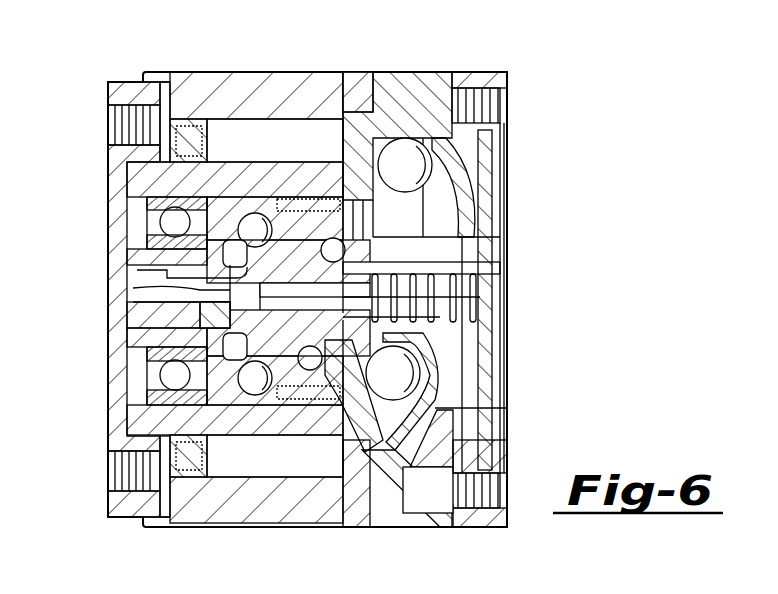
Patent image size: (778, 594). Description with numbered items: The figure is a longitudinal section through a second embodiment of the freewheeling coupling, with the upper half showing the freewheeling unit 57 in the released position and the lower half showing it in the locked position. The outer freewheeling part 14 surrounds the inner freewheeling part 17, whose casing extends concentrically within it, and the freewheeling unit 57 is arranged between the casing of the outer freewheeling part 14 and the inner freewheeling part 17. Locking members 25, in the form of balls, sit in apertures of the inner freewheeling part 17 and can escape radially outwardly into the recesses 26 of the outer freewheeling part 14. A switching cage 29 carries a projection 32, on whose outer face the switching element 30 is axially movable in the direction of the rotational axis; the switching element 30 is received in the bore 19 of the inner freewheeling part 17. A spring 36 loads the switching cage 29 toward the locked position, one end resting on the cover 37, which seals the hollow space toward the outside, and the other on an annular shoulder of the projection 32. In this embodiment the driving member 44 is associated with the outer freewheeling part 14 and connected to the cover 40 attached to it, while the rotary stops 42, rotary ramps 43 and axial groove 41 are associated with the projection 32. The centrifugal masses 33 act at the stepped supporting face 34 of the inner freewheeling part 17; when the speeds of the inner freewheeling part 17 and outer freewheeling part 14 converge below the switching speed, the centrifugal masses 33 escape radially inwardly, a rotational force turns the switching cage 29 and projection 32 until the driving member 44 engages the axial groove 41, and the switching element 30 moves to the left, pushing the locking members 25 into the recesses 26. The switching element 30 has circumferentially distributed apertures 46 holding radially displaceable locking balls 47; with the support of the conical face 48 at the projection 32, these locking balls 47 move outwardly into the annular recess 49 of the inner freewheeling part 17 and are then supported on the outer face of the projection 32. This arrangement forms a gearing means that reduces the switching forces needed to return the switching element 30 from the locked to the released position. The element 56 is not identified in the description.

The outer freewheeling part 14 is at (106, 512).
The inner freewheeling part 17 is at (447, 527).
The bore 19 is at (344, 72).
The locking members 25 is at (223, 400).
The recesses 26 is at (200, 456).
The switching cage 29 is at (445, 164).
The switching element 30 is at (286, 228).
The projection 32 is at (430, 258).
The centrifugal masses 33 is at (403, 68).
The supporting face 34 is at (500, 400).
The spring 36 is at (500, 307).
The cover 37 is at (500, 264).
The cover 40 is at (127, 334).
The axial groove 41 is at (112, 352).
The rotary stops 42 is at (127, 292).
The rotary ramps 43 is at (127, 322).
The driving member 44 is at (127, 270).
The apertures 46 is at (380, 520).
The locking balls 47 is at (315, 402).
The conical face 48 is at (277, 400).
The annular recess 49 is at (330, 237).
The member 56 is at (370, 440).
The freewheeling unit 57 is at (224, 148).